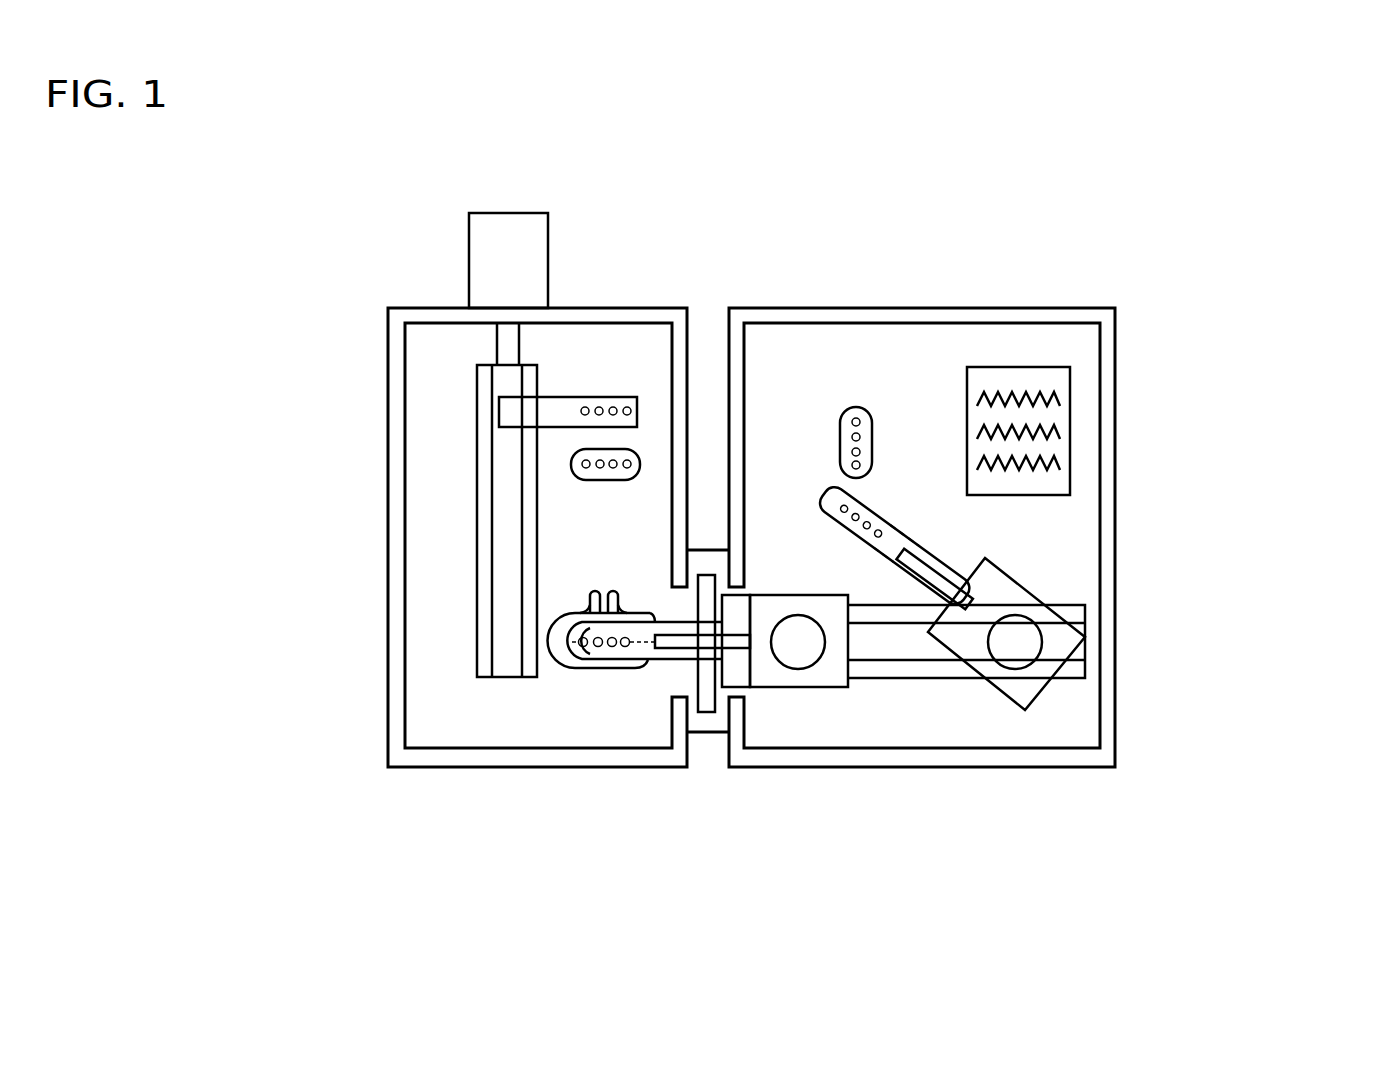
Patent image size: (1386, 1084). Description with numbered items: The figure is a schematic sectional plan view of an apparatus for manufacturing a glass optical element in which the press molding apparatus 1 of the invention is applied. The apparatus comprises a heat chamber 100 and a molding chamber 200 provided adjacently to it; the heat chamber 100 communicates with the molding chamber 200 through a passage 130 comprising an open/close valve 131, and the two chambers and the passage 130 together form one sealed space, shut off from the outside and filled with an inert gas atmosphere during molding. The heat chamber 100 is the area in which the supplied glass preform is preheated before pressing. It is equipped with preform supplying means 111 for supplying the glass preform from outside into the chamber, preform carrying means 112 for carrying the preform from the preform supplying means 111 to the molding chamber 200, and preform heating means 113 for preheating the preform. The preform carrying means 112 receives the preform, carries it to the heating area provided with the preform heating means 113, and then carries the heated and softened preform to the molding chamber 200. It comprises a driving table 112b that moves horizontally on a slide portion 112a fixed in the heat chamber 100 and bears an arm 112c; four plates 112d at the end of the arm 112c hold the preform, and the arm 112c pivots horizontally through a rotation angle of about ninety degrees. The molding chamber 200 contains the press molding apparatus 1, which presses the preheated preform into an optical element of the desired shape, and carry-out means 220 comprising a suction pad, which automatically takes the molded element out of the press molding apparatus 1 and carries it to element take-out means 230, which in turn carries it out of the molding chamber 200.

The press molding apparatus 1 is at (553, 670).
The heat chamber 100 is at (1048, 308).
The molding chamber 200 is at (605, 307).
The preform supplying means 111 is at (857, 407).
The preform carrying means 112 is at (963, 697).
The slide portion 112a is at (893, 670).
The driving table 112b is at (772, 676).
The arm 112c is at (682, 653).
The plates 112d is at (608, 647).
The preform heating means 113 is at (993, 367).
The passage 130 is at (690, 600).
The open/close valve 131 is at (718, 598).
The carry-out means 220 is at (457, 515).
The element take-out means 230 is at (640, 453).